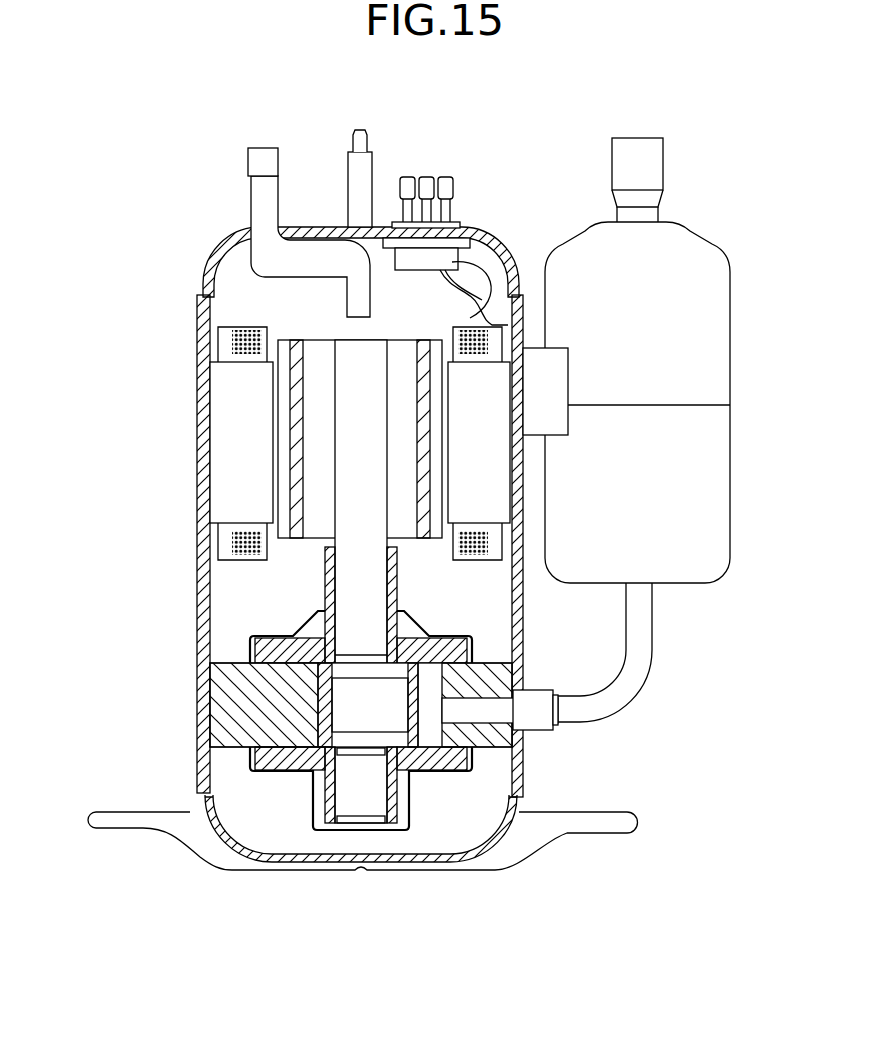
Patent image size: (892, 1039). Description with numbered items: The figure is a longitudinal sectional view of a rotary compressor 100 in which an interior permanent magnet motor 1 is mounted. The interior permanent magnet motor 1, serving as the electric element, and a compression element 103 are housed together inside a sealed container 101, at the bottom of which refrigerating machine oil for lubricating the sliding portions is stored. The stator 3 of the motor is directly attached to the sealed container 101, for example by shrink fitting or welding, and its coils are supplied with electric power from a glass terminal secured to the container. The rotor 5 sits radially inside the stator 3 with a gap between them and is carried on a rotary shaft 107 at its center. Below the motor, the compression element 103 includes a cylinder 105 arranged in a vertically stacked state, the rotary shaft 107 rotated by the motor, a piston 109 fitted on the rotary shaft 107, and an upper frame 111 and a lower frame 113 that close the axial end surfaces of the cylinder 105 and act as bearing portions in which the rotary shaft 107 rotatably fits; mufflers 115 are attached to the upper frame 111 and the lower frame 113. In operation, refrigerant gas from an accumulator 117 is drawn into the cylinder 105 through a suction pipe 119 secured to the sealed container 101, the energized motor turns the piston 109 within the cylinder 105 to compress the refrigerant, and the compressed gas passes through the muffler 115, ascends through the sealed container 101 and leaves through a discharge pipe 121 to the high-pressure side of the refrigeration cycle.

The rotary compressor 100 is at (93, 106).
The sealed container 101 is at (211, 250).
The discharge pipe 121 is at (253, 230).
The interior permanent magnet motor 1 is at (312, 422).
The stator 3 is at (197, 392).
The rotor 5 is at (286, 470).
The rotary shaft 107 is at (355, 590).
The upper frame 111 is at (432, 650).
The lower frame 113 is at (457, 763).
The muffler 115 is at (290, 623).
The cylinder 105 is at (228, 662).
The piston 109 is at (318, 703).
The compression element 103 is at (302, 608).
The accumulator 117 is at (732, 328).
The suction pipe 119 is at (654, 668).